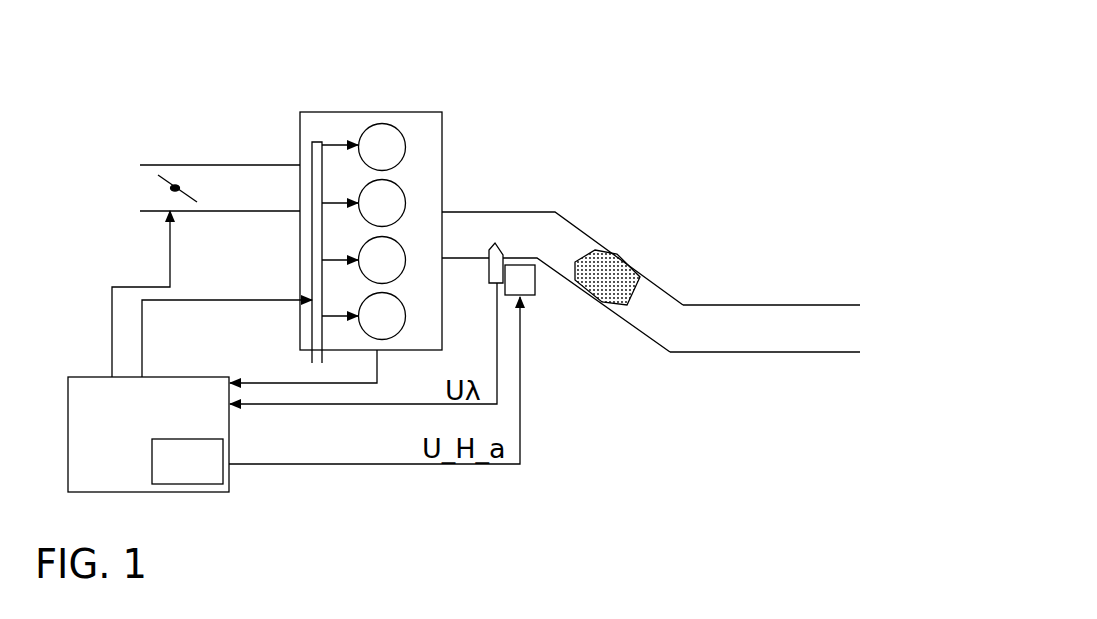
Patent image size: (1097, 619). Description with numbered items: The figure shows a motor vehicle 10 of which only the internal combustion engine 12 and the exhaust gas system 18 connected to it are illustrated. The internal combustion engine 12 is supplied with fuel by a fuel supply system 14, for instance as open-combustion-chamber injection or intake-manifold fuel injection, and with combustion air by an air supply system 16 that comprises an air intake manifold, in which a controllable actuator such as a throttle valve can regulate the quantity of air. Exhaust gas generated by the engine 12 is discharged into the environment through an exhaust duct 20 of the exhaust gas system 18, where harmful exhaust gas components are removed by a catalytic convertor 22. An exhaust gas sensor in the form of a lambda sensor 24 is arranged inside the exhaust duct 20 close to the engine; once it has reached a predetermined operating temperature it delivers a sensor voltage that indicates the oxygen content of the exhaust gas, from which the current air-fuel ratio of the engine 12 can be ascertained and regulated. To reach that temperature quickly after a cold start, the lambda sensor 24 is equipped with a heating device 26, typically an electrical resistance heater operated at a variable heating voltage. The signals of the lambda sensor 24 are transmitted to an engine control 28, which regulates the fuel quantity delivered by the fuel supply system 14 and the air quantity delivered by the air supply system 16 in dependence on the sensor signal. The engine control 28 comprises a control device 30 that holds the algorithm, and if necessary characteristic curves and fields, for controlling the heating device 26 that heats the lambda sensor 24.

The motor vehicle 10 is at (293, 88).
The internal combustion engine 12 is at (423, 130).
The fuel supply system 14 is at (313, 150).
The air supply system 16 is at (193, 173).
The exhaust gas system 18 is at (720, 207).
The exhaust duct 20 is at (800, 315).
The catalytic convertor 22 is at (618, 257).
The lambda sensor 24 is at (496, 252).
The heating device 26 is at (523, 285).
The engine control 28 is at (128, 421).
The control device 30 is at (208, 477).